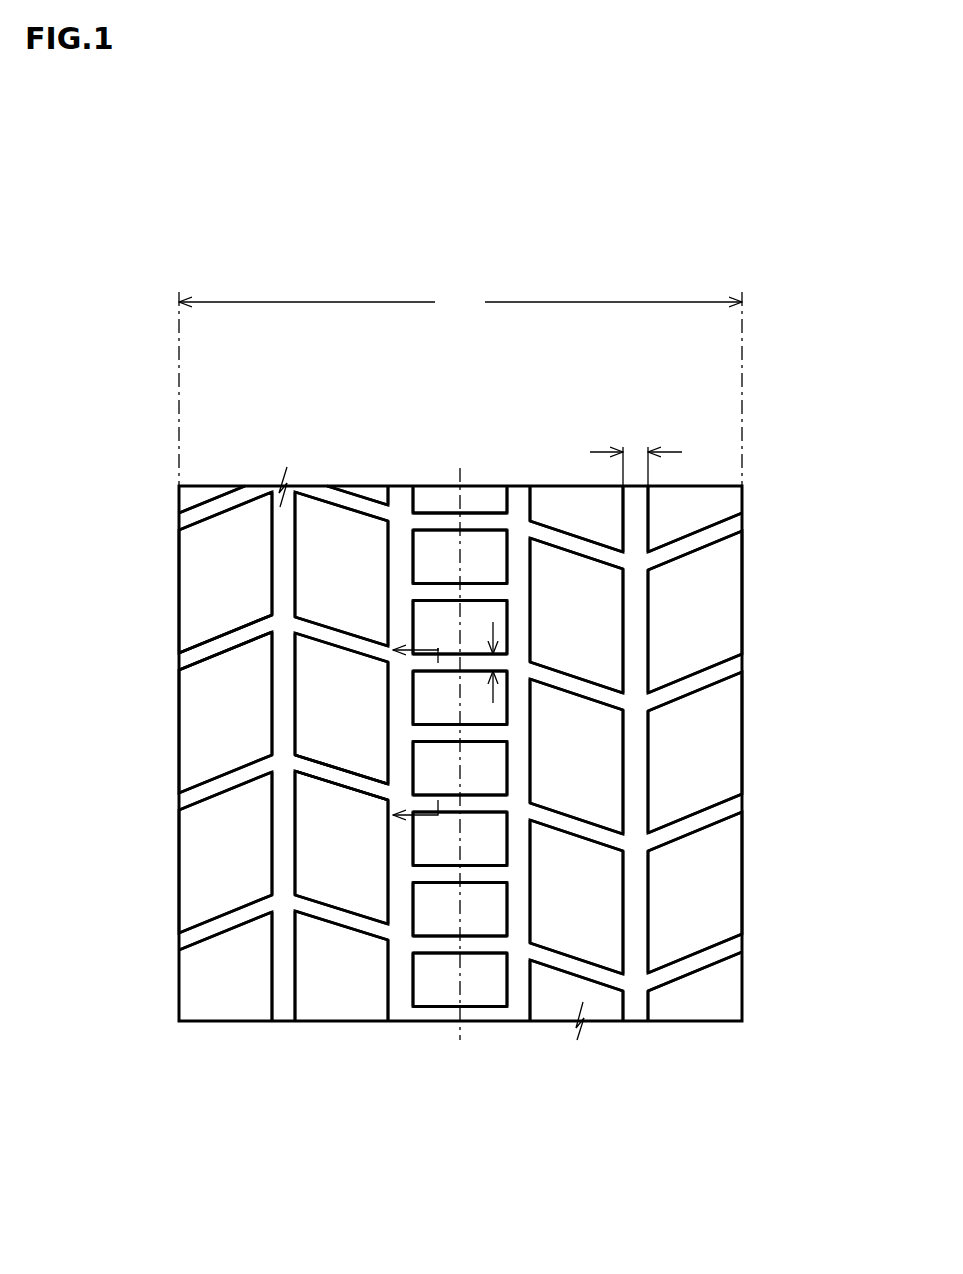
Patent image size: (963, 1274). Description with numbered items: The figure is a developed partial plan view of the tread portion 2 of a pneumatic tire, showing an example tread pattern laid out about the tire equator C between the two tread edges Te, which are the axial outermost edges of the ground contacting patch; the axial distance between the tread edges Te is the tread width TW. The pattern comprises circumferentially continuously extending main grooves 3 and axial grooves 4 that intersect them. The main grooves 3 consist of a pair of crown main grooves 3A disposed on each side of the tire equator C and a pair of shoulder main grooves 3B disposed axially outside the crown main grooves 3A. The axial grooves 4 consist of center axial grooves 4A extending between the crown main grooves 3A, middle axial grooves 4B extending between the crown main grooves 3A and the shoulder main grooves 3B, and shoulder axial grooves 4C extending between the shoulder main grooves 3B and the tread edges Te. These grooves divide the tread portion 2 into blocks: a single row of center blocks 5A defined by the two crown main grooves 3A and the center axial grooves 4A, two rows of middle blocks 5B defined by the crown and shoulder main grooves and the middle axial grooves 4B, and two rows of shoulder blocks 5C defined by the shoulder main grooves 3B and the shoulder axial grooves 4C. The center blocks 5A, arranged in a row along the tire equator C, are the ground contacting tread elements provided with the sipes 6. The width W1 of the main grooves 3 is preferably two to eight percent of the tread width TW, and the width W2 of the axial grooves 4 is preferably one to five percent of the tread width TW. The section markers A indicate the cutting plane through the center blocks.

The tread portion 2 is at (223, 582).
The main grooves 3 is at (670, 1102).
The crown main grooves 3A is at (405, 973).
The shoulder main grooves 3B is at (288, 973).
The axial grooves 4 is at (228, 643).
The center axial grooves 4A is at (470, 806).
The middle axial grooves 4B is at (567, 826).
The shoulder axial grooves 4C is at (677, 688).
The center blocks 5A is at (436, 546).
The middle blocks 5B is at (350, 547).
The shoulder blocks 5C is at (237, 545).
The sipes 6 is at (472, 582).
The tread width TW is at (460, 302).
The tread edges Te is at (178, 420).
The tire equator C is at (458, 741).
The width of main grooves W1 is at (636, 453).
The width of axial grooves W2 is at (493, 662).
The section line A- A is at (414, 734).